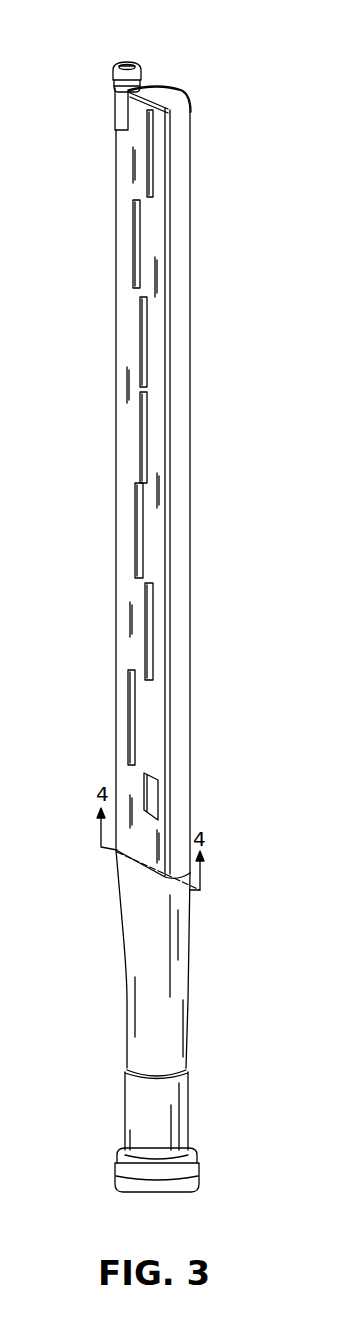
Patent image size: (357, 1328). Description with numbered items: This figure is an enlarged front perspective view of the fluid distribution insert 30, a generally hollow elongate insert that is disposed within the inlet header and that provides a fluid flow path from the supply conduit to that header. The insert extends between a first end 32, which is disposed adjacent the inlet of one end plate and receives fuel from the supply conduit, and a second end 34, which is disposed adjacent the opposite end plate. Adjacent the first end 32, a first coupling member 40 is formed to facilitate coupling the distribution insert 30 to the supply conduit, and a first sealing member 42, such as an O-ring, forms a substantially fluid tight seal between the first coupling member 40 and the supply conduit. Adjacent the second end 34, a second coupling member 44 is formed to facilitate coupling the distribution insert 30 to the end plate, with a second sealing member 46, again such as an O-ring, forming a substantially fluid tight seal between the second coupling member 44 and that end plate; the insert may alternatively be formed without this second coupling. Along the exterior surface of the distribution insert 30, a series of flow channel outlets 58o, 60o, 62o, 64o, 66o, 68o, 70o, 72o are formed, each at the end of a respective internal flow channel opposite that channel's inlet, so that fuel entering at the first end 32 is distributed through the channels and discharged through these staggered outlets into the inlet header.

The fluid distribution insert 30 is at (225, 61).
The first end 32 is at (188, 1110).
The second end 34 is at (178, 100).
The first coupling member 40 is at (119, 1150).
The first sealing member 42 is at (116, 1167).
The second coupling member 44 is at (128, 60).
The second sealing member 46 is at (114, 76).
The flow channel outlet 58o is at (158, 800).
The flow channel outlet 60o is at (135, 720).
The flow channel outlet 62o is at (153, 630).
The flow channel outlet 64o is at (143, 528).
The flow channel outlet 66o is at (148, 437).
The flow channel outlet 68o is at (148, 343).
The flow channel outlet 70o is at (143, 243).
The flow channel outlet 72o is at (155, 155).